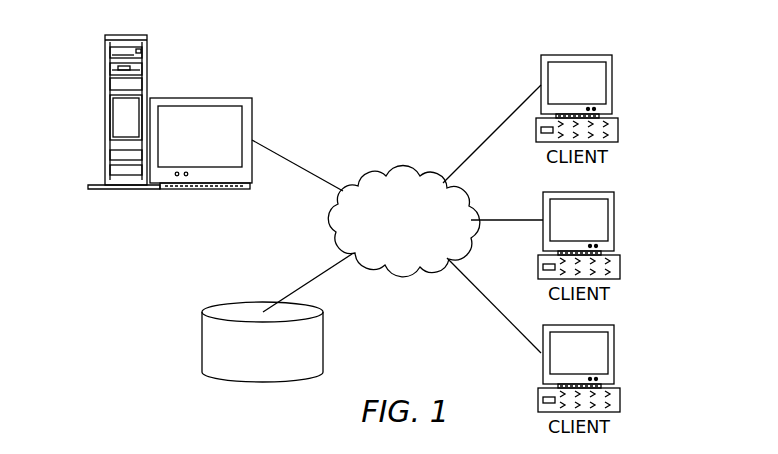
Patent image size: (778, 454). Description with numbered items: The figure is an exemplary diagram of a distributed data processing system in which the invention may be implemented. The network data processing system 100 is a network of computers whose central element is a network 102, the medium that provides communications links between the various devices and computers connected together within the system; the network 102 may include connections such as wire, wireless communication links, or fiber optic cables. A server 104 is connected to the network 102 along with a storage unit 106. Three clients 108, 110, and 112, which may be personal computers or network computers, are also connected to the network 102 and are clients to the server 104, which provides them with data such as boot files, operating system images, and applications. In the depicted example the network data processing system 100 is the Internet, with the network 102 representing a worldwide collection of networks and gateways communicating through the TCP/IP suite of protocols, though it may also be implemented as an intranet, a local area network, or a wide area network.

The network data processing system 100 is at (449, 66).
The network 102 is at (377, 173).
The server 104 is at (105, 115).
The storage unit 106 is at (202, 342).
The client 108 is at (612, 83).
The client 110 is at (613, 220).
The client 112 is at (613, 358).